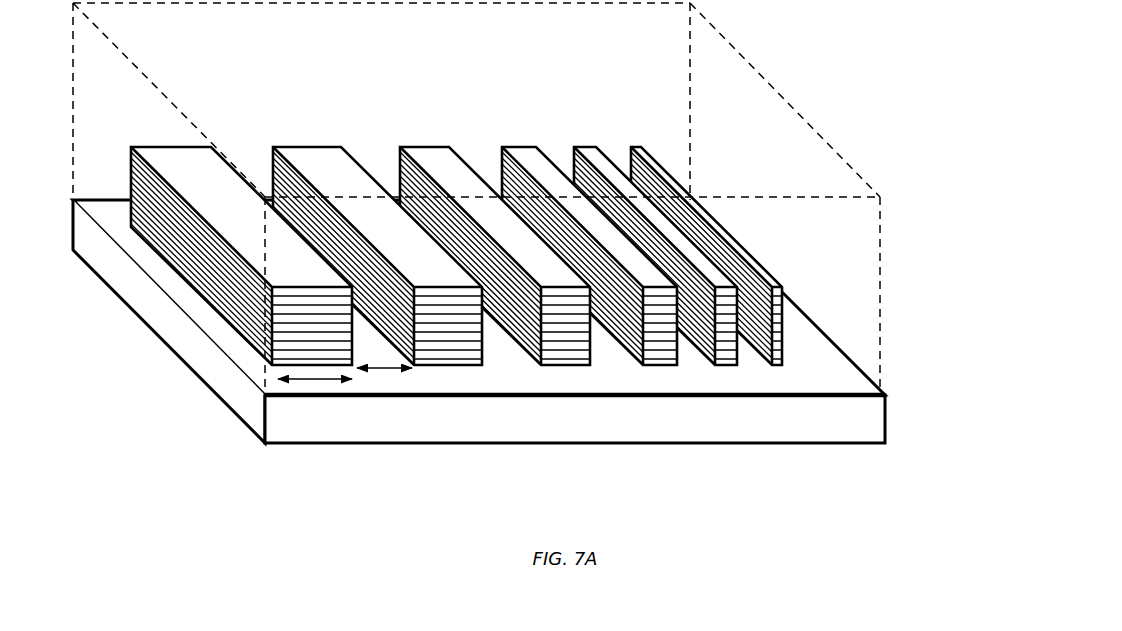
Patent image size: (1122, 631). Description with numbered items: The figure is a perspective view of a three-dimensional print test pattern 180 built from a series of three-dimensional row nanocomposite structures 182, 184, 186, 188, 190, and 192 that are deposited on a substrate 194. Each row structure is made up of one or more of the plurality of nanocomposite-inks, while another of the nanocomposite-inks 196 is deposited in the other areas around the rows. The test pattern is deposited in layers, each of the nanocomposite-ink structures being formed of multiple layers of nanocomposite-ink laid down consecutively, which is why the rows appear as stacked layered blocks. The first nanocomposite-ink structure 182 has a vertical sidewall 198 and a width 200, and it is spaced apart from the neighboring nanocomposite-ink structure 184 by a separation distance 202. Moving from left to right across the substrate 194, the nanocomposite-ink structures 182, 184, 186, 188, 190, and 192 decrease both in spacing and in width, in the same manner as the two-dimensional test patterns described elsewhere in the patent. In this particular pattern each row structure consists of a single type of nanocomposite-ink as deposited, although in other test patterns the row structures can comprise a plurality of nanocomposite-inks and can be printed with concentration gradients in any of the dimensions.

The 3-dimension test pattern 180 is at (760, 62).
The row nanocomposite structure 182 is at (192, 160).
The row nanocomposite structure 184 is at (325, 170).
The row nanocomposite structure 186 is at (440, 152).
The row nanocomposite structure 188 is at (535, 153).
The row nanocomposite structure 190 is at (577, 146).
The row nanocomposite structure 192 is at (636, 147).
The substrate 194 is at (702, 445).
The nanocomposite-ink 196 is at (278, 108).
The vertical sidewall 198 is at (203, 263).
The width 200 is at (310, 383).
The separation distance 202 is at (388, 373).